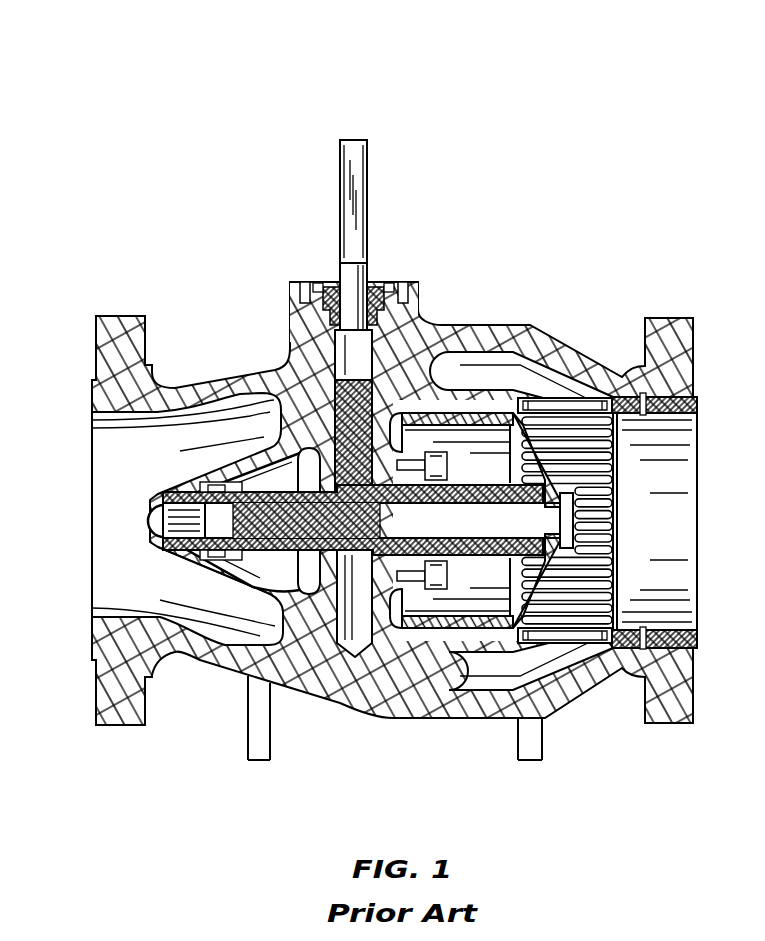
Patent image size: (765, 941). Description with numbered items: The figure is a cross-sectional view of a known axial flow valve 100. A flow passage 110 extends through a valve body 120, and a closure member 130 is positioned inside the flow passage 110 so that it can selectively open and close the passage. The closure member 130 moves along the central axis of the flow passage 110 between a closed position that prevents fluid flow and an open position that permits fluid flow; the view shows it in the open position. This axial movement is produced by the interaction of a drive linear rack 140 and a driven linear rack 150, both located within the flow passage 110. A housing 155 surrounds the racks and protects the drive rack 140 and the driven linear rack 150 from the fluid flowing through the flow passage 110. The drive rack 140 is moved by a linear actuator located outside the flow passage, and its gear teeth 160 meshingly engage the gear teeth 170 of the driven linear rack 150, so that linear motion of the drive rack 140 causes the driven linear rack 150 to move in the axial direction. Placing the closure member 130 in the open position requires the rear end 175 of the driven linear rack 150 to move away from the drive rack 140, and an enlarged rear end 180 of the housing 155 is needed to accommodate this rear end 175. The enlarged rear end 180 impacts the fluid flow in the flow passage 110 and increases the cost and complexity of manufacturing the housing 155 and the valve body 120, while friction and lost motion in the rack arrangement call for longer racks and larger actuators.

The axial flow valve 100 is at (547, 74).
The flow passage 110 is at (130, 577).
The valve body 120 is at (562, 352).
The closure member 130 is at (549, 587).
The drive linear rack 140 is at (378, 385).
The driven linear rack 150 is at (217, 530).
The housing 155 is at (262, 455).
The gear teeth 160 is at (332, 452).
The gear teeth 170 is at (288, 545).
The rear end 175 is at (205, 521).
The enlarged rear end 180 is at (160, 495).